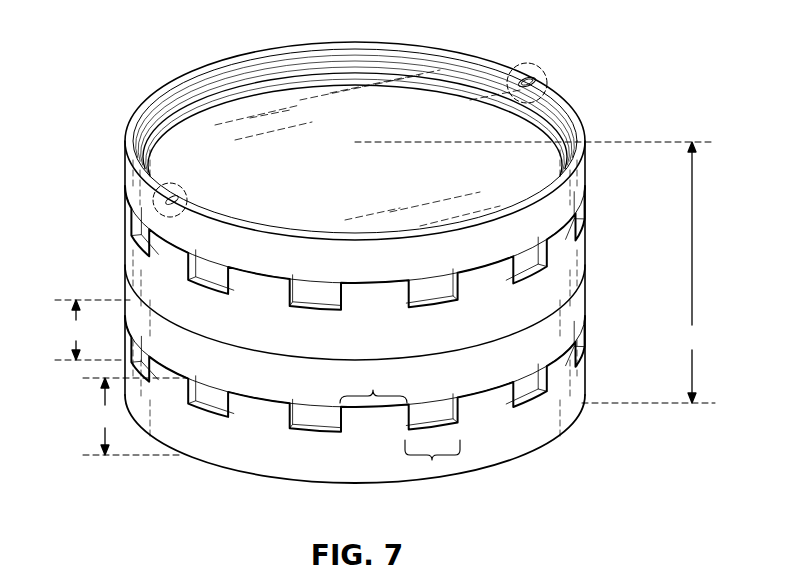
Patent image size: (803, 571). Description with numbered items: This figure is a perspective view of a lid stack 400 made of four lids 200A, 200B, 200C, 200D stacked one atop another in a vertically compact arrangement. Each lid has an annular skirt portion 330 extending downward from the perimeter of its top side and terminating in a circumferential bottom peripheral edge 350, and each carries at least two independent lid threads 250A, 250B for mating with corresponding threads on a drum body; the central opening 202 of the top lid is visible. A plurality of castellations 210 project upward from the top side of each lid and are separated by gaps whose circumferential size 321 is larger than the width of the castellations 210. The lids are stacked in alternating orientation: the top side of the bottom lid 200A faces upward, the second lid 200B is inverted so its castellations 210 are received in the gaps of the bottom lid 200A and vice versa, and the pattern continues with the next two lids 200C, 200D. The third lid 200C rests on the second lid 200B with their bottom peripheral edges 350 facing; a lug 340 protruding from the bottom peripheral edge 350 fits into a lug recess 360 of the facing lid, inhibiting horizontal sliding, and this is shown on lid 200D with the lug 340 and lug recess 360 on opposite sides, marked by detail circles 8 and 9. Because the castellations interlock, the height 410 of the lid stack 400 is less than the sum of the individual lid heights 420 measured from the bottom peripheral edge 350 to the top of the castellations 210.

The lid stack 400 is at (106, 72).
The annular skirt portion 330 is at (122, 176).
The bottom peripheral edge 350 is at (172, 88).
The lid thread 250A is at (318, 75).
The lid thread 250B is at (386, 60).
The central opening 202 is at (415, 125).
The lug 340 is at (531, 79).
The lug recess 360 is at (180, 191).
The detail circle FIG. 8 is at (131, 203).
The detail circle FIG. 9 is at (550, 75).
The lid 200D is at (588, 183).
The lid 200C is at (584, 249).
The lid 200B is at (584, 308).
The lid 200A is at (584, 378).
The castellation 210 is at (373, 422).
The circumferential size 321 is at (374, 391).
The height 410 is at (535, 272).
The lid height 420 is at (121, 377).